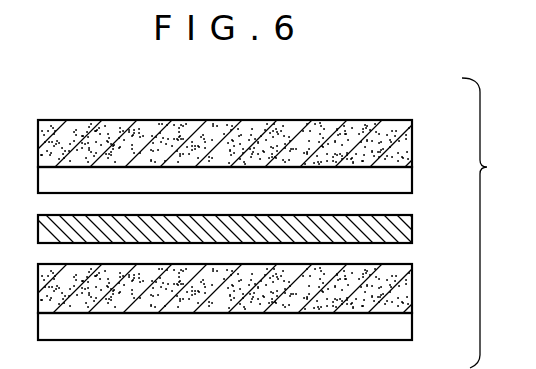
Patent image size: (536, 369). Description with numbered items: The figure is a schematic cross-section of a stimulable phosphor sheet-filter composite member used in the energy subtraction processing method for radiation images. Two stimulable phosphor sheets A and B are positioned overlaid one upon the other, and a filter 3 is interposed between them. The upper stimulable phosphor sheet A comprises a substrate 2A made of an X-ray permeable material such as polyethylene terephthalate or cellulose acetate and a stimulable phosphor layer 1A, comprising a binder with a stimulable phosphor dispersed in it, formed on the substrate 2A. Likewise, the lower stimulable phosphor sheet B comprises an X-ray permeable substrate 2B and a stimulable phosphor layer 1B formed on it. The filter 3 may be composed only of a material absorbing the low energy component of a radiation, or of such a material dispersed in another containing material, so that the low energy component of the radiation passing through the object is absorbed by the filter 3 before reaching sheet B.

The stimulable phosphor layer 1A is at (358, 125).
The substrate 2A is at (403, 178).
The stimulable phosphor sheet A is at (229, 138).
The filter 3 is at (402, 224).
The stimulable phosphor layer 1B is at (398, 277).
The substrate 2B is at (400, 327).
The stimulable phosphor sheet B is at (229, 315).